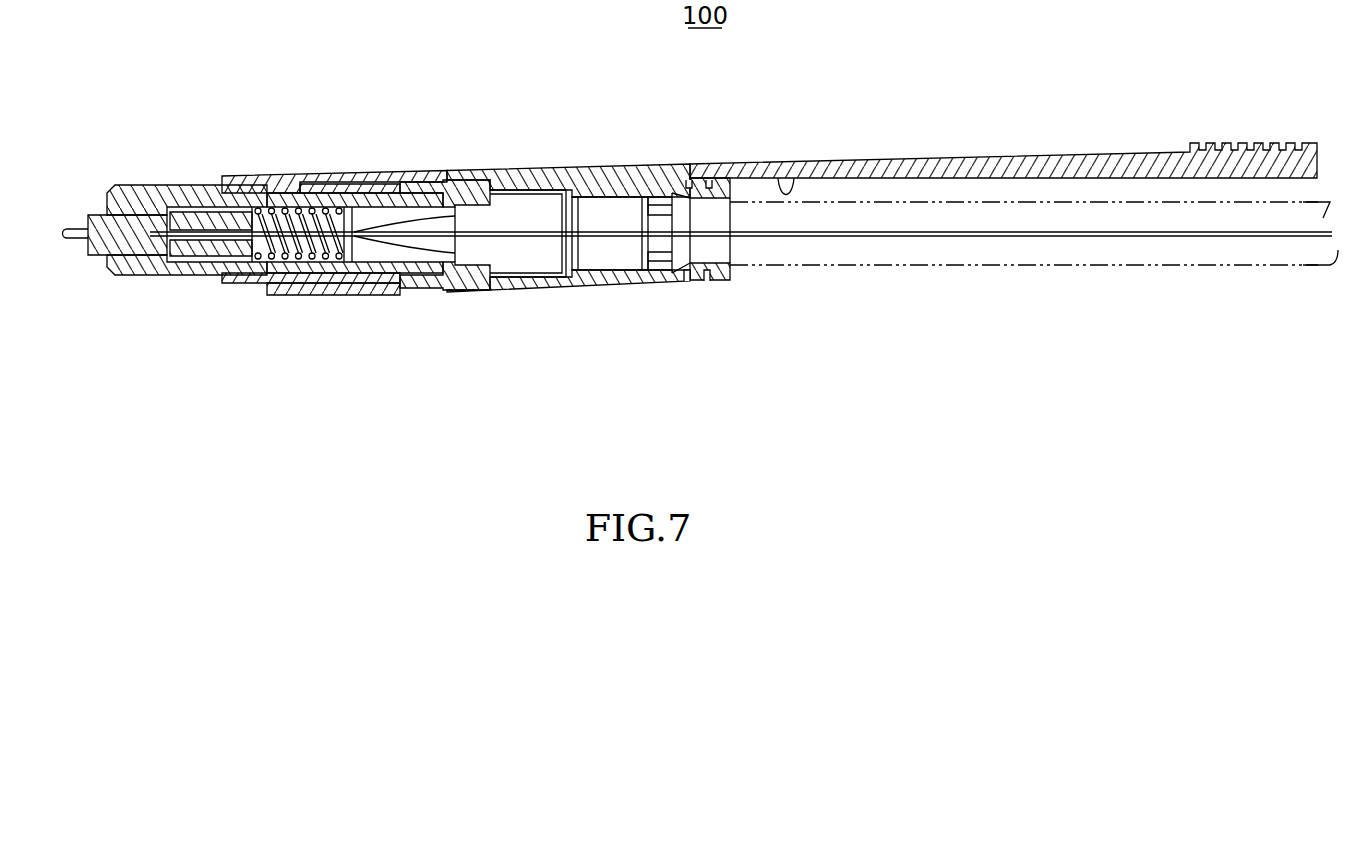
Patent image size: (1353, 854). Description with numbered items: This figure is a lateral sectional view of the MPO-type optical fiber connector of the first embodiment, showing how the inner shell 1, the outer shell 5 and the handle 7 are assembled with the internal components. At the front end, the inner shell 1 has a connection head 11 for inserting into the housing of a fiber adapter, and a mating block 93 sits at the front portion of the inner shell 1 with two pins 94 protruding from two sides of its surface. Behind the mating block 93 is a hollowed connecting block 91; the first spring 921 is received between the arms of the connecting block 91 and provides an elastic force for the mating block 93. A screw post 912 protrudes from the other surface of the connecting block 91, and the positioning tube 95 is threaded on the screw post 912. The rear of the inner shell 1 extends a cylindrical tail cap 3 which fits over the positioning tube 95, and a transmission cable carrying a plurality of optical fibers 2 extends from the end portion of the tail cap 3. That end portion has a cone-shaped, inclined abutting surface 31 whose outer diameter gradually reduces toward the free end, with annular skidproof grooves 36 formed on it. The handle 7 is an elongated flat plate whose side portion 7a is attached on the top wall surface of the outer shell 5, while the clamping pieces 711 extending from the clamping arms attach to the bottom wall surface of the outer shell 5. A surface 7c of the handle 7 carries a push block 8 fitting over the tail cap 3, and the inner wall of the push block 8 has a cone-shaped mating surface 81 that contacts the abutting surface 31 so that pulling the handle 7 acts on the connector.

The pins 94 is at (74, 230).
The mating block 93 is at (118, 242).
The connection head 11 is at (131, 193).
The optical fibers 2 is at (160, 231).
The inner shell 1 is at (215, 272).
The first spring 921 is at (298, 225).
The side portion of the handle 7a is at (270, 178).
The outer shell 5 is at (372, 183).
The clamping piece 711 is at (333, 296).
The connecting block 91 is at (477, 186).
The screw post 912 is at (522, 274).
The tail cap 3 is at (628, 286).
The positioning tube 95 is at (607, 196).
The mating surface 81 is at (676, 196).
The push block 8 is at (718, 188).
The abutting surface 31 is at (702, 188).
The skidproof grooves 36 is at (708, 283).
The handle 7 is at (1025, 170).
The surface of the handle 7c is at (795, 190).